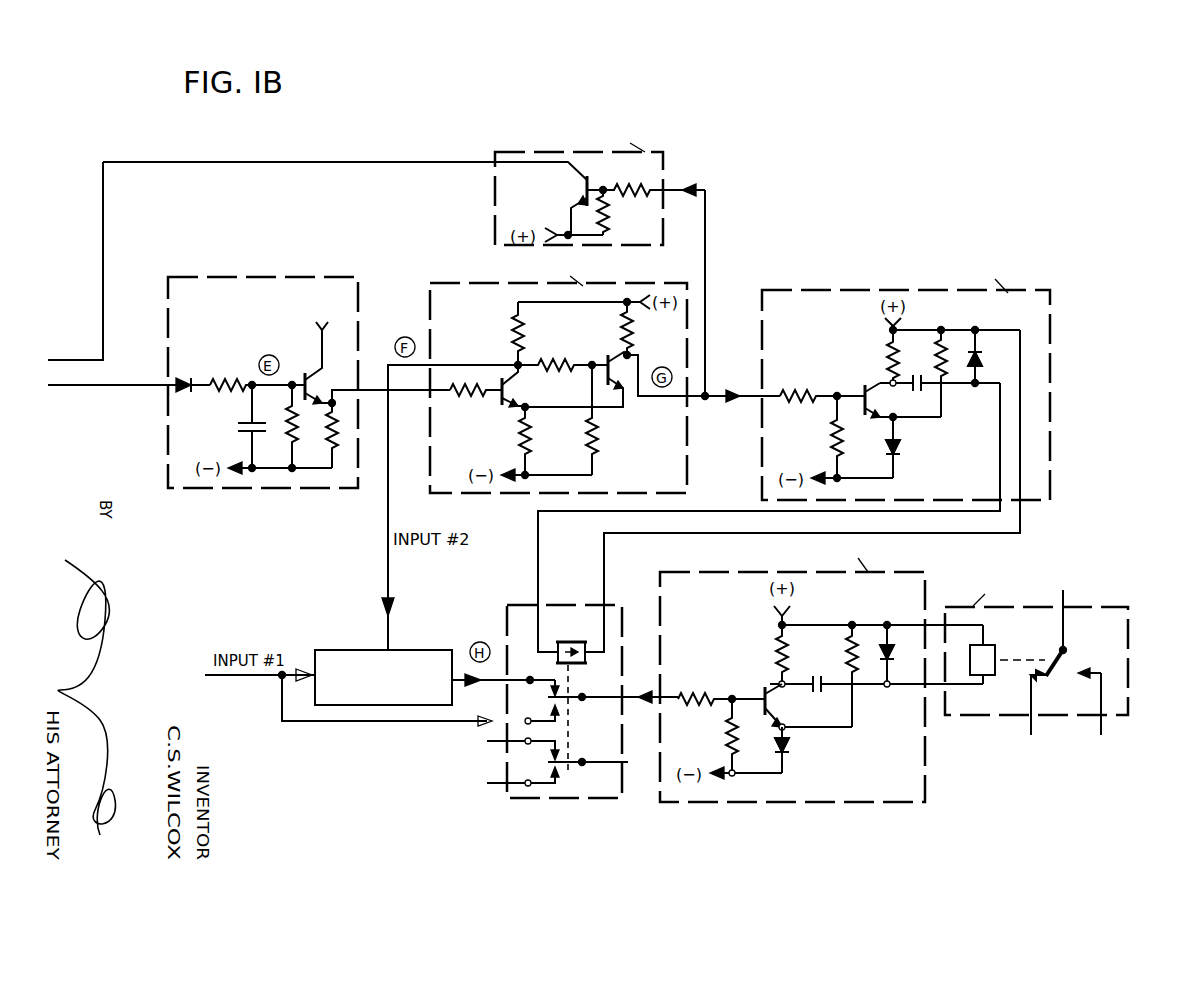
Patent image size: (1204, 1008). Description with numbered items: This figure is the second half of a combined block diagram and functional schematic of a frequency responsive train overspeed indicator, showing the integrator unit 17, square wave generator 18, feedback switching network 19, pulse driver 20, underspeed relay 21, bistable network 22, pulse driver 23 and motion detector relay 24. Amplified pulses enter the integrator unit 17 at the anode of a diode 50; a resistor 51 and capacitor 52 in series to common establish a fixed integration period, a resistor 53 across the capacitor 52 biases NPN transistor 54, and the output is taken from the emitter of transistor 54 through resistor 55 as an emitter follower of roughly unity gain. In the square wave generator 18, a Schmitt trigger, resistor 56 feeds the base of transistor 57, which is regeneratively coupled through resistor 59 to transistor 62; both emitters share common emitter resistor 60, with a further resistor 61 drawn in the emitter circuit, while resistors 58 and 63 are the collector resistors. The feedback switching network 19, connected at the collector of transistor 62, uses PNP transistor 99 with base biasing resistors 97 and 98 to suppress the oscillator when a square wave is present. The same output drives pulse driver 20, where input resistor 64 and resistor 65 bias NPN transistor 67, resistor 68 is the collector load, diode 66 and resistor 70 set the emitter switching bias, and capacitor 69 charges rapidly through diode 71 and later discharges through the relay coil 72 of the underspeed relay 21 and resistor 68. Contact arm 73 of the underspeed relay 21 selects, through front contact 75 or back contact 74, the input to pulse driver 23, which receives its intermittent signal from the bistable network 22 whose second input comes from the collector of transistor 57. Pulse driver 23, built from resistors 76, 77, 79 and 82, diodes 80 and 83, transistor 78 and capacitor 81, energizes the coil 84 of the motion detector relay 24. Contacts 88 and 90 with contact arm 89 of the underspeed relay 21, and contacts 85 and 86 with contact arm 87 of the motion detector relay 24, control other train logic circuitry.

The integrator unit 17 is at (333, 280).
The square wave generator 18 is at (428, 308).
The feedback switching network 19 is at (665, 178).
The pulse driver 20 is at (1052, 308).
The underspeed relay (USR) 21 is at (521, 603).
The bistable network 22 is at (408, 650).
The pulse driver 23 is at (927, 594).
The motion detector relay (MDR) 24 is at (1130, 623).
The diode 50 is at (186, 378).
The resistor 51 is at (226, 380).
The capacitor 52 is at (240, 426).
The resistor 53 is at (288, 424).
The NPN transistor 54 is at (300, 373).
The resistor 55 is at (328, 446).
The resistor 56 is at (462, 397).
The transistor 57 is at (513, 383).
The resistor 58 is at (512, 333).
The resistor 59 is at (560, 358).
The common emitter resistor 60 is at (518, 440).
The resistor 61 is at (598, 440).
The transistor 62 is at (604, 356).
The resistor 63 is at (632, 338).
The input resistor 64 is at (798, 392).
The resistor 65 is at (830, 452).
The diode 66 is at (900, 448).
The NPN transistor 67 is at (860, 393).
The collector load resistor 68 is at (886, 352).
The capacitor 69 is at (915, 391).
The resistor 70 is at (934, 362).
The diode 71 is at (982, 358).
The relay coil 72 is at (586, 663).
The contact arm 73 is at (582, 705).
The back contact 74 is at (548, 720).
The front contact 75 is at (549, 678).
The resistor 76 is at (700, 694).
The resistor 77 is at (726, 738).
The transistor 78 is at (776, 700).
The resistor 79 is at (776, 654).
The diode 80 is at (790, 746).
The capacitor 81 is at (813, 682).
The resistor 82 is at (846, 648).
The diode 83 is at (894, 652).
The relay coil 84 is at (996, 652).
The contact 85 is at (1038, 680).
The contact 86 is at (1091, 670).
The contact arm 87 is at (1068, 650).
The contact 88 is at (546, 745).
The contact arm 89 is at (584, 760).
The contact 90 is at (560, 783).
The base biasing resistor 97 is at (638, 190).
The base biasing resistor 98 is at (608, 216).
The PNP transistor 99 is at (592, 190).